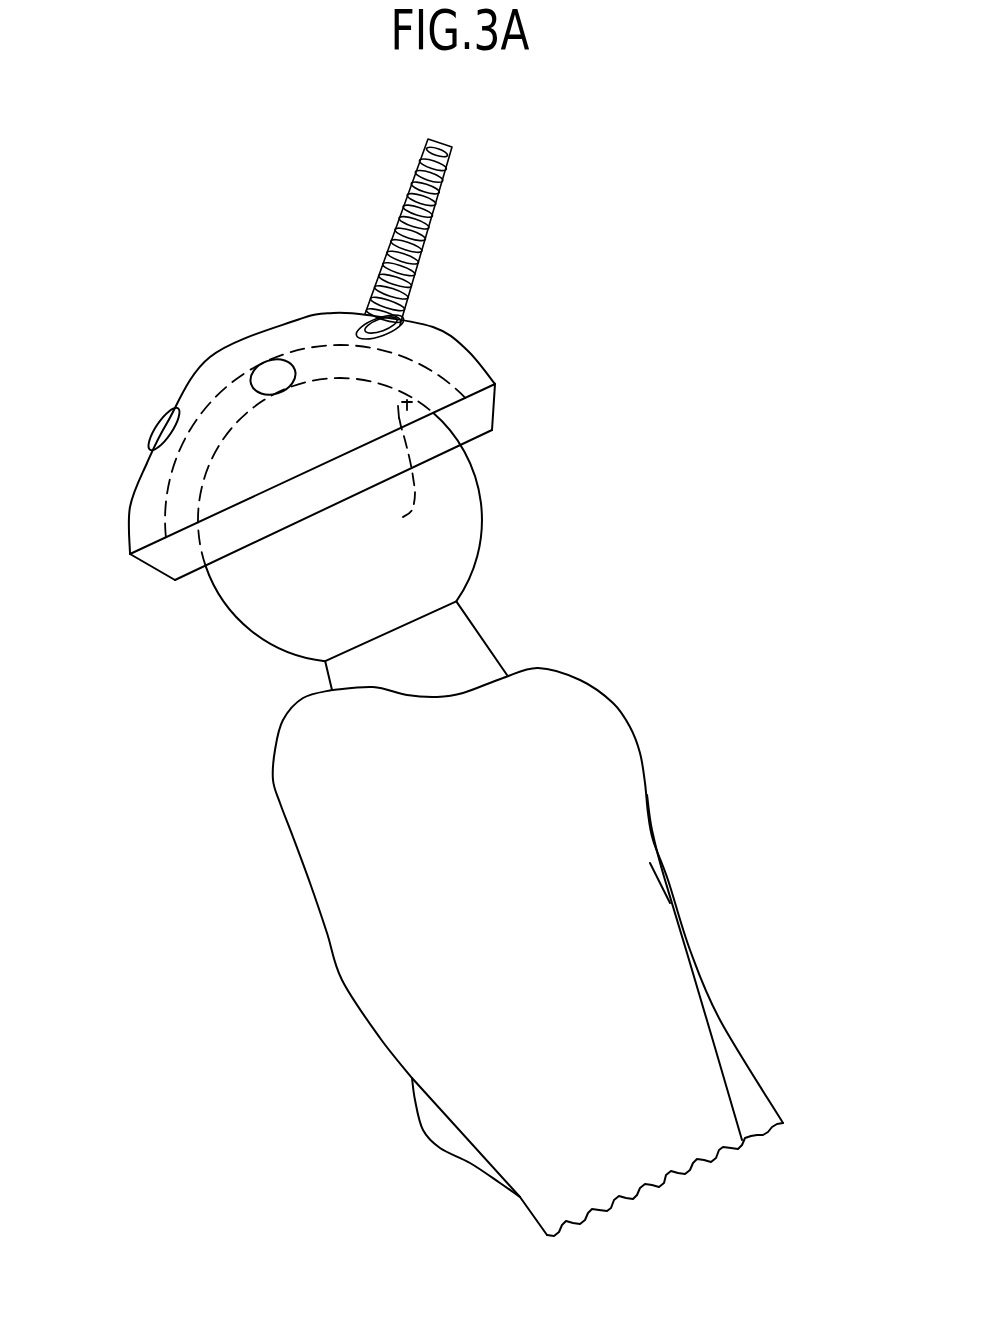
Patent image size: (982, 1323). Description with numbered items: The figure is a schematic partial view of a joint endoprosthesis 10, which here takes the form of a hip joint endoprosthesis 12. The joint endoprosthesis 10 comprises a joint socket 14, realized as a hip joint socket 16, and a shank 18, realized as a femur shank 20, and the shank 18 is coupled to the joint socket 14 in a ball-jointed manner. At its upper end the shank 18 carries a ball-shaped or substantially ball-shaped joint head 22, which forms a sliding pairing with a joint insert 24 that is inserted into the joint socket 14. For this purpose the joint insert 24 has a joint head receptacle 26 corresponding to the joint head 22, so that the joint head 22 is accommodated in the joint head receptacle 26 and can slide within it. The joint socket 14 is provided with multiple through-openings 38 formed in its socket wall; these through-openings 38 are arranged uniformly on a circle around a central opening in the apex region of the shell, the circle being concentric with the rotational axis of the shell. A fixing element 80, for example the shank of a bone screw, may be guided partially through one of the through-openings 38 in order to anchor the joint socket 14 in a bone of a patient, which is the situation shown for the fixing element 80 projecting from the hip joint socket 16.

The joint endoprosthesis 10 is at (606, 555).
The hip joint endoprosthesis 12 is at (222, 720).
The joint socket 14 is at (447, 300).
The hip joint socket 16 is at (200, 347).
The shank 18 is at (715, 829).
The femur shank 20 is at (338, 882).
The joint head 22 is at (243, 593).
The joint insert 24 is at (180, 560).
The joint head receptacle 26 is at (405, 474).
The through-openings 38 is at (165, 428).
The fixing element 80 is at (402, 208).